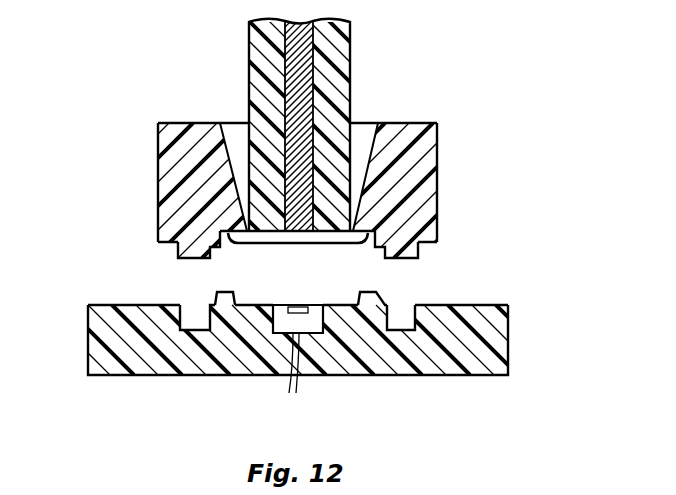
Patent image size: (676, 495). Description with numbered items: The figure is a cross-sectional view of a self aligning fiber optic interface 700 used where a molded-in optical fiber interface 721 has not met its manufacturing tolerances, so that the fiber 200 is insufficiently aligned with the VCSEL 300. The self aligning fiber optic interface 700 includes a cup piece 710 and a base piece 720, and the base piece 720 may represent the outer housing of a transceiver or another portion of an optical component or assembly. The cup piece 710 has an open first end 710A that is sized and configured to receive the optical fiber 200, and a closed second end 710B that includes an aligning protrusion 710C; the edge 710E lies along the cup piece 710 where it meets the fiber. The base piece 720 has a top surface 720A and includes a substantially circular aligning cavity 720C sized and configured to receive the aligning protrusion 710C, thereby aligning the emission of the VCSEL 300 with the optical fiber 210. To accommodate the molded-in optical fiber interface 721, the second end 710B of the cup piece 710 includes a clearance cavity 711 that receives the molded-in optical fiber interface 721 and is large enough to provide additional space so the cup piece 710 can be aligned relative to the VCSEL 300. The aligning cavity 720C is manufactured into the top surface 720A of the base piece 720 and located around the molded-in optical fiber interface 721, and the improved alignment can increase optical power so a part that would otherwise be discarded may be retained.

The self aligning fiber optic interface 700 is at (304, 228).
The cup piece 710 is at (293, 187).
The open first end 710A is at (436, 122).
The closed second end 710B is at (425, 250).
The aligning protrusion 710C is at (185, 259).
The tapered bore edge 710E is at (229, 130).
The clearance cavity 711 is at (360, 246).
The base piece 720 is at (307, 347).
The top surface 720A is at (476, 305).
The aligning cavity 720C is at (385, 333).
The molded-in optical fiber interface 721 is at (368, 292).
The optical fiber 200 is at (303, 125).
The optical fiber 210 is at (302, 43).
The VCSEL 300 is at (312, 377).